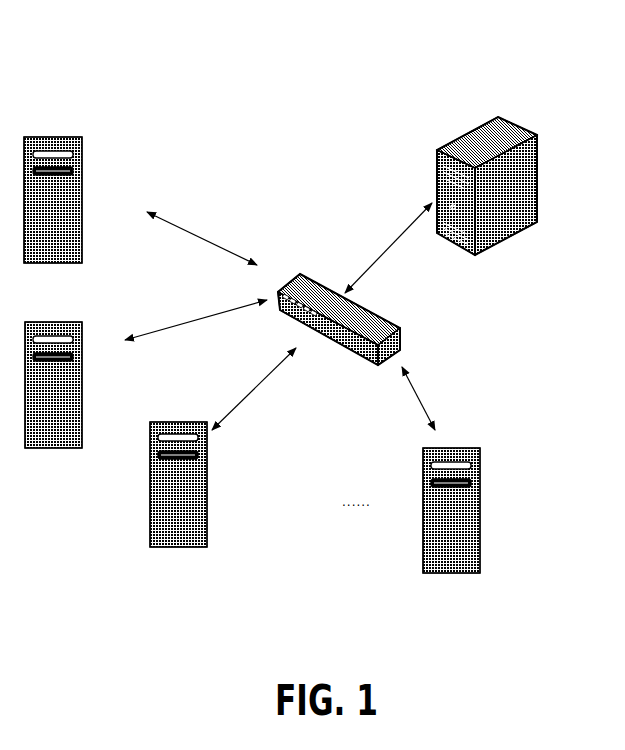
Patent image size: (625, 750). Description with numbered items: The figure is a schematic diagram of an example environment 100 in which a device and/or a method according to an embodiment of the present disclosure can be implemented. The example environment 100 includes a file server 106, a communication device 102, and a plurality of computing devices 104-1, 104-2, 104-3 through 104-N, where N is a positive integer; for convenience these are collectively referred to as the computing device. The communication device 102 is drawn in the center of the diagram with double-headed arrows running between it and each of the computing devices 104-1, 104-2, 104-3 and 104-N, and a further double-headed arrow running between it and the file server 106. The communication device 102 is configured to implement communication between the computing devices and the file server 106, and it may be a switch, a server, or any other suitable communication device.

The example environment 100 is at (146, 53).
The communication device 102 is at (402, 326).
The computing device 104-1 is at (82, 137).
The computing device 104-2 is at (82, 322).
The computing device 104-3 is at (207, 458).
The computing device 104-N is at (467, 448).
The file server 106 is at (522, 128).